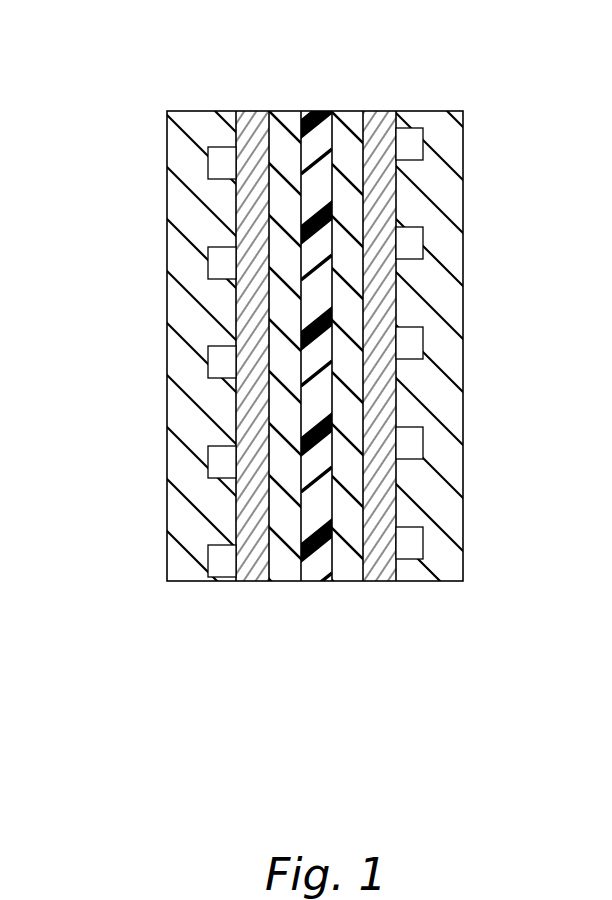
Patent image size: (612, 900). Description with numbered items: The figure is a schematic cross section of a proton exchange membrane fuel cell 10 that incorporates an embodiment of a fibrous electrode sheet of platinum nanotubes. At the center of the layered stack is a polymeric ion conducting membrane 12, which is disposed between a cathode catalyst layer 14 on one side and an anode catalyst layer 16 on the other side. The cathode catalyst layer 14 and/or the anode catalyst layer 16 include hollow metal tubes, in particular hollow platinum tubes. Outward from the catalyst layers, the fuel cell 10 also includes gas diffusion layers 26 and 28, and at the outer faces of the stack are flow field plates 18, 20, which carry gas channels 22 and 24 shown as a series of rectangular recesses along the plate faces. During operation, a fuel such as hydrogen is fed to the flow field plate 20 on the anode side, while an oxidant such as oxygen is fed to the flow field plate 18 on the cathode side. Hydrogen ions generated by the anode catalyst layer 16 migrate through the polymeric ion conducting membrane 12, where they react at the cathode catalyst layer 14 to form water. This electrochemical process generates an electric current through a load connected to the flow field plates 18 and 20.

The proton exchange membrane fuel cell 10 is at (97, 113).
The polymeric ion conducting membrane 12 is at (322, 112).
The cathode catalyst layer 14 is at (288, 112).
The anode catalyst layer 16 is at (344, 112).
The flow field plate 18 is at (198, 116).
The flow field plate 20 is at (421, 112).
The gas channels 22 is at (215, 162).
The gas channels 24 is at (416, 144).
The gas diffusion layer 26 is at (258, 112).
The gas diffusion layer 28 is at (383, 112).